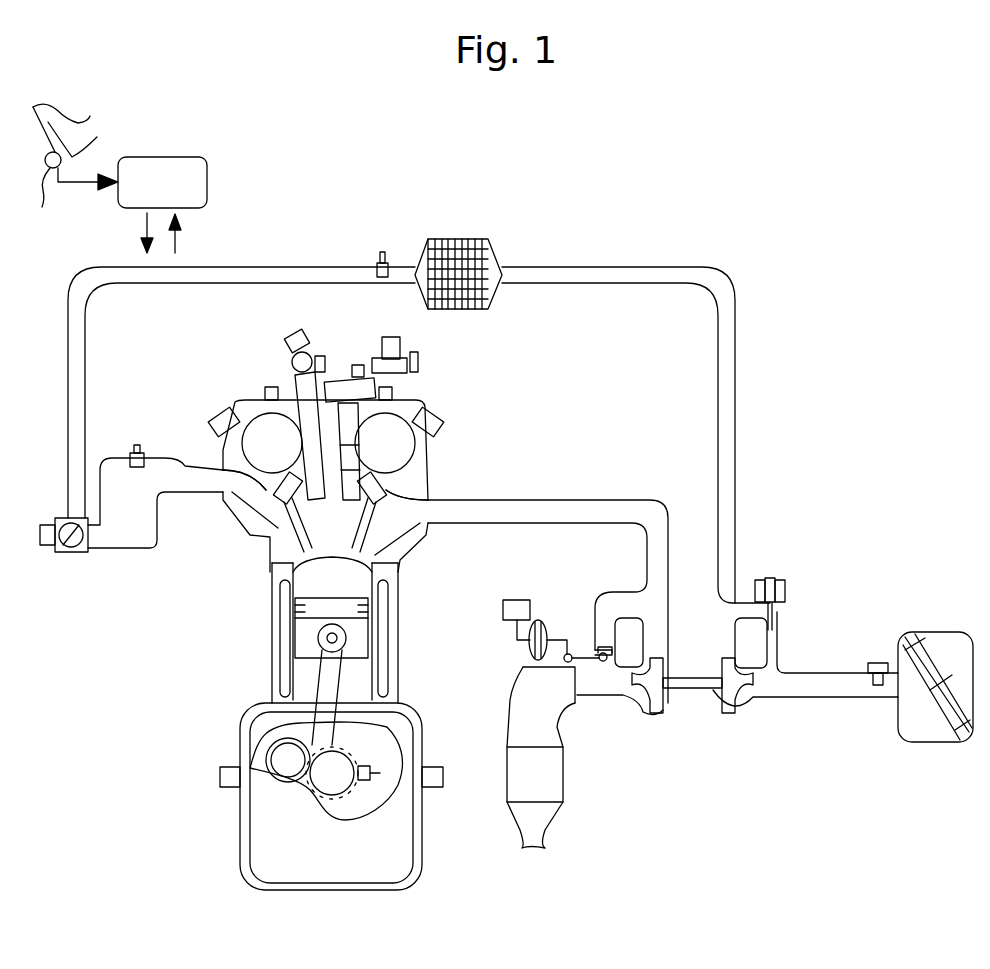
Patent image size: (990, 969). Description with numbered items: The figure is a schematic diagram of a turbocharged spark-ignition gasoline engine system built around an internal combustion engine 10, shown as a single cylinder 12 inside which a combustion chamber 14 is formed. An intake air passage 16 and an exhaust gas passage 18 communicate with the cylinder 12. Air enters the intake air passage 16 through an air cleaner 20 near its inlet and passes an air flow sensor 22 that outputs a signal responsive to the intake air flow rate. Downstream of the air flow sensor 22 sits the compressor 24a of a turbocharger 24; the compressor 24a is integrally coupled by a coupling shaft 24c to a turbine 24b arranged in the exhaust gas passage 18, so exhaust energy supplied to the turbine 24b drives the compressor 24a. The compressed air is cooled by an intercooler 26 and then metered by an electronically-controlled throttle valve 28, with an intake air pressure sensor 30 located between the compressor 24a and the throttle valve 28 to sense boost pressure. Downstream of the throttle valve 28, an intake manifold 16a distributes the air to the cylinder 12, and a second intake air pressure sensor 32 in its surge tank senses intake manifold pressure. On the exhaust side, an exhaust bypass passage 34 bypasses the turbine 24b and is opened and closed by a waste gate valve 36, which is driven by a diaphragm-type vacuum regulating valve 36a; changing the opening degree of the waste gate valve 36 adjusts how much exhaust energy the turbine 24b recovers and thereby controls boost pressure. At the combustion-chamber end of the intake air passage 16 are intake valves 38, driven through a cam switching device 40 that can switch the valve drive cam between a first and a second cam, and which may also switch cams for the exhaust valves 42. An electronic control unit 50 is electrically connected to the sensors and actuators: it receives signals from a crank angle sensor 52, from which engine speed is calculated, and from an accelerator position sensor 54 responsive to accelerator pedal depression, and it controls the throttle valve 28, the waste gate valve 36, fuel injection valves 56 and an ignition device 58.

The internal combustion engine 10 is at (363, 601).
The cylinder 12 is at (295, 597).
The combustion chamber 14 is at (318, 572).
The intake air passage 16 is at (755, 330).
The intake manifold 16a is at (135, 552).
The exhaust gas passage 18 is at (598, 498).
The air cleaner 20 is at (963, 632).
The air flow sensor 22 is at (882, 660).
The turbocharger 24 is at (702, 713).
The compressor 24a is at (737, 697).
The turbine 24b is at (658, 703).
The coupling shaft 24c is at (680, 683).
The intercooler 26 is at (467, 237).
The throttle valve 28 is at (62, 555).
The intake air pressure sensor 30 is at (383, 250).
The intake air pressure sensor 32 is at (137, 443).
The exhaust bypass passage 34 is at (613, 607).
The waste gate valve 36 is at (573, 632).
The vacuum regulating valve 36a is at (530, 650).
The intake valve 38 is at (262, 527).
The cam switching device 40 is at (258, 433).
The exhaust valve 42 is at (424, 500).
The electronic control unit 50 is at (207, 178).
The crank angle sensor 52 is at (388, 778).
The accelerator position sensor 54 is at (72, 176).
The fuel injection valve 56 is at (305, 385).
The ignition device 58 is at (342, 437).